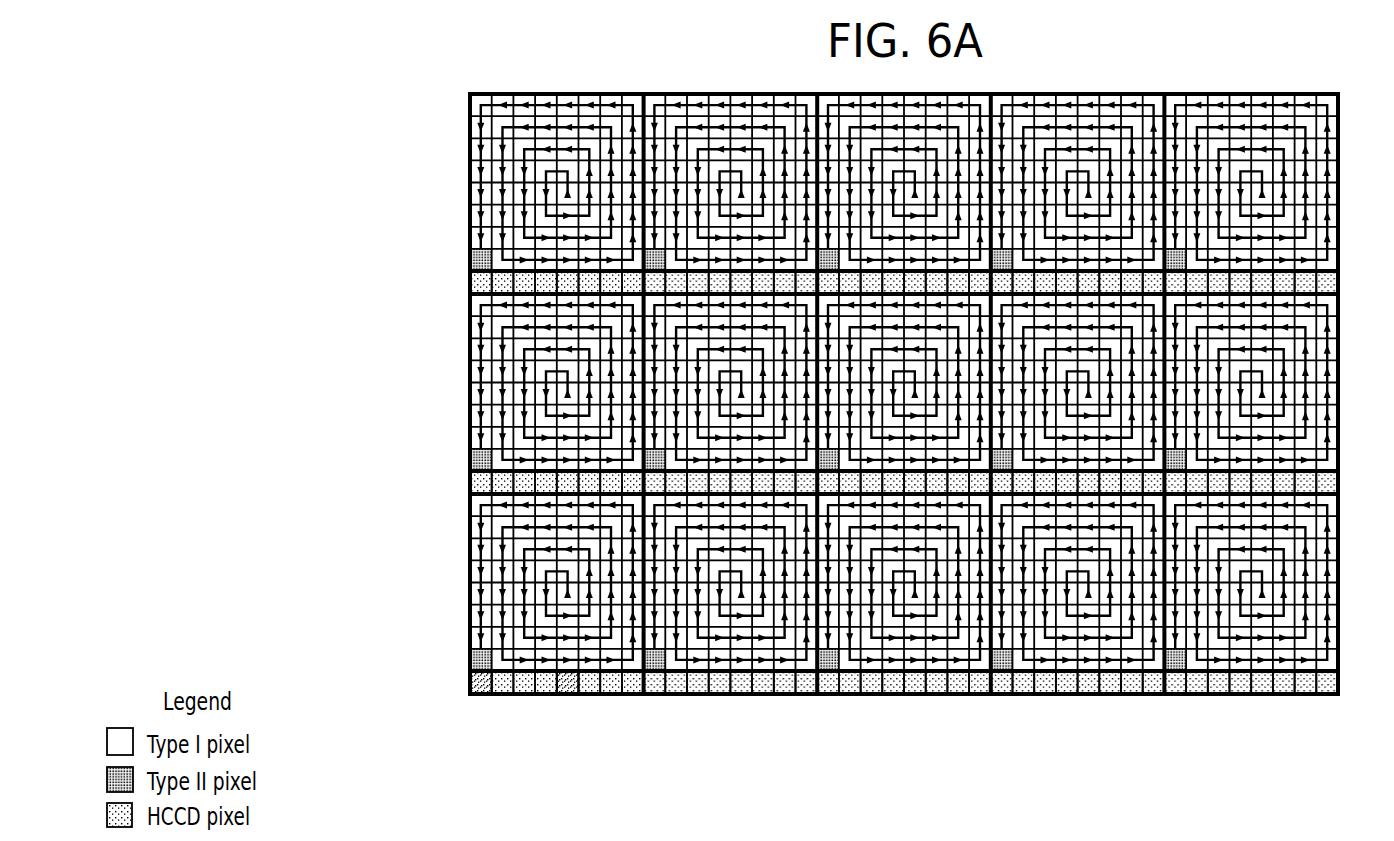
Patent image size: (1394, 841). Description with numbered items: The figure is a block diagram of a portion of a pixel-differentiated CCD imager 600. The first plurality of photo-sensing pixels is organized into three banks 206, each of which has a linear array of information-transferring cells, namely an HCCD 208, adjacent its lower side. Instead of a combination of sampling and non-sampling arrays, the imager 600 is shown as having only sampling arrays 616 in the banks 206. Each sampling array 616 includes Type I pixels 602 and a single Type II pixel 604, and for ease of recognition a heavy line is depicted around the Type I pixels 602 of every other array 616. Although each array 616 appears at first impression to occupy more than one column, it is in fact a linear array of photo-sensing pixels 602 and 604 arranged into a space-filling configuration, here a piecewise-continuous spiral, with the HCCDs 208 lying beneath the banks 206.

The pixel-differentiated CCD imager 600 is at (809, 416).
The Type I pixel 602 is at (678, 97).
The Type II pixel 604 is at (478, 678).
The sampling array 616 is at (568, 680).
The bank 206 is at (819, 351).
The HCCD 208 is at (809, 517).